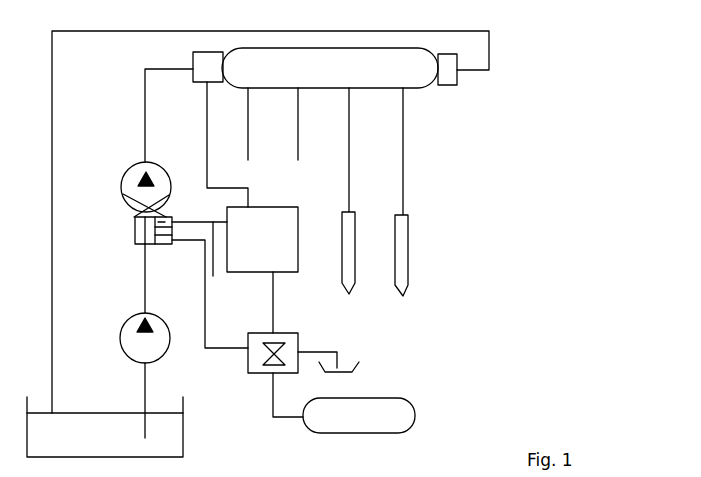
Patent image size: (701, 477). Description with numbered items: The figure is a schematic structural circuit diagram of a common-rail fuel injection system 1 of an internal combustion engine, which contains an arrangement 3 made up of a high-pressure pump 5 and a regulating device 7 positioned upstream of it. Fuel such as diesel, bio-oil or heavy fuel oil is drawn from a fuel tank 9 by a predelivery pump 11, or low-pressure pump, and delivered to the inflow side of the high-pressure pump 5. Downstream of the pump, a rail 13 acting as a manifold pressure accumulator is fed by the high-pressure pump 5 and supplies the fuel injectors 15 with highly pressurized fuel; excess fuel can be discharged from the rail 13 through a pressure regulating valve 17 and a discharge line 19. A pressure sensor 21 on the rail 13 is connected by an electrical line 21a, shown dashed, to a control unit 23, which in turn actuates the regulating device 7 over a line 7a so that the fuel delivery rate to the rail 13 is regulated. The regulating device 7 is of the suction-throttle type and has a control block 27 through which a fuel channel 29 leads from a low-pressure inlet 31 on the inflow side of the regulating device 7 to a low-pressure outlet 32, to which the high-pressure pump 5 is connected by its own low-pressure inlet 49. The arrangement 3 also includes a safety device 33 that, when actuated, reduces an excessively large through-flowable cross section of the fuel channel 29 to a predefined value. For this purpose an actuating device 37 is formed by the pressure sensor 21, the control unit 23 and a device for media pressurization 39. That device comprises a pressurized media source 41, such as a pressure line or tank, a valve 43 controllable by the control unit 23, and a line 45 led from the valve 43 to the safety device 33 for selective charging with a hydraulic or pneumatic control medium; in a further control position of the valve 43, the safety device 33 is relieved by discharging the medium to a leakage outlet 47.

The fuel injection system 1 is at (428, 154).
The arrangement 3 is at (124, 229).
The high-pressure pump 5 is at (130, 163).
The regulating device 7 is at (185, 213).
The line 7a is at (215, 276).
The fuel tank 9 is at (173, 437).
The predelivery pump 11 is at (128, 360).
The rail 13 is at (341, 82).
The fuel injectors 15 is at (405, 247).
The pressure regulating valve 17 is at (454, 80).
The discharge line 19 is at (347, 32).
The pressure sensor 21 is at (196, 63).
The electrical line 21a is at (250, 188).
The control unit 23 is at (289, 221).
The control block 27 is at (133, 218).
The fuel channel 29 is at (141, 246).
The low-pressure inlet 31 is at (138, 247).
The low-pressure outlet 32 is at (136, 214).
The safety device 33 is at (160, 244).
The actuating device 37 is at (240, 331).
The device for media pressurization 39 is at (353, 341).
The pressurized media source 41 is at (388, 415).
The valve 43 is at (257, 371).
The line 45 is at (204, 279).
The leakage outlet 47 is at (312, 352).
The low-pressure inlet 49 is at (174, 184).